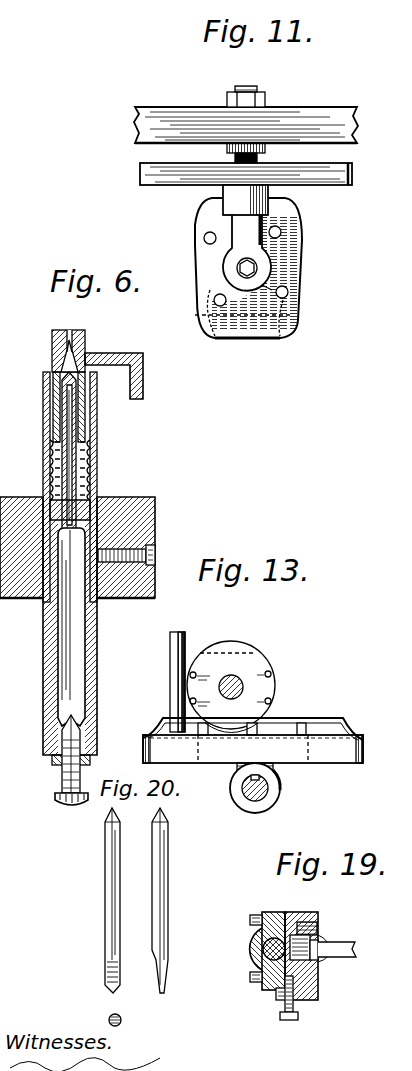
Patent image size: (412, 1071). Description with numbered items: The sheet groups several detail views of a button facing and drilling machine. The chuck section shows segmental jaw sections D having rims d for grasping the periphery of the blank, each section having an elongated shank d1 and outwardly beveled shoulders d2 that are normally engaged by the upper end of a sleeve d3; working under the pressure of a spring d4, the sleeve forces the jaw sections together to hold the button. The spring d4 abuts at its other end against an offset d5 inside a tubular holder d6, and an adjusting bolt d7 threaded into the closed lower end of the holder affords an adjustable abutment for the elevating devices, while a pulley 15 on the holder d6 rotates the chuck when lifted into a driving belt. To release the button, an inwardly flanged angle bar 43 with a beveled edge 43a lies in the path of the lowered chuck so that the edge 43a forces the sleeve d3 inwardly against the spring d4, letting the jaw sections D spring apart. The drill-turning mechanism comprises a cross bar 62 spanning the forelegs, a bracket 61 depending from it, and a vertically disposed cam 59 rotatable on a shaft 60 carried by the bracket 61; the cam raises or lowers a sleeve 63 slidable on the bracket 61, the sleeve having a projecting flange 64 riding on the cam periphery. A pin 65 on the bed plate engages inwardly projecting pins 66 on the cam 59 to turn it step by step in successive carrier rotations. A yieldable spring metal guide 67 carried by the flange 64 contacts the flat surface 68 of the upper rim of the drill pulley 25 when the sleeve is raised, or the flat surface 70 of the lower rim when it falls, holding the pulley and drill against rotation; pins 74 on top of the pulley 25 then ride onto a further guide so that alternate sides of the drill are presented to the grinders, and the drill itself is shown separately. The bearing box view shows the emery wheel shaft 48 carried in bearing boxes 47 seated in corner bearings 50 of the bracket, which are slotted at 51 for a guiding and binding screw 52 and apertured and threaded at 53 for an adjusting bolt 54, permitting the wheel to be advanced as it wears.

In FIG. 11, the cross bar 62 is at (292, 112).
In FIG. 11, the projecting flange 64 is at (140, 172).
In FIG. 13, the projecting flange 64 is at (148, 750).
In FIG. 11, the sleeve 63 is at (270, 200).
In FIG. 13, the sleeve 63 is at (230, 789).
In FIG. 11, the cam 59 is at (302, 262).
In FIG. 13, the cam 59 is at (200, 760).
In FIG. 11, the bracket 61 is at (232, 256).
In FIG. 13, the bracket 61 is at (255, 801).
In FIG. 11, the shaft 60 is at (272, 280).
In FIG. 11, the inwardly projecting pins 66 is at (208, 233).
In FIG. 13, the inwardly projecting pins 66 is at (306, 730).
In FIG. 11, the pin 65 is at (195, 315).
In FIG. 13, the pin 65 is at (172, 659).
In FIG. 6, the segmental jaw sections D is at (52, 346).
In FIG. 6, the rims d is at (85, 334).
In FIG. 6, the beveled edge 43a is at (106, 355).
In FIG. 6, the angle bar 43 is at (143, 383).
In FIG. 6, the sleeve d3 is at (43, 386).
In FIG. 6, the beveled shoulders d2 is at (53, 364).
In FIG. 6, the elongated shank d1 is at (62, 408).
In FIG. 6, the spring d4 is at (50, 467).
In FIG. 6, the pulley 15 is at (155, 528).
In FIG. 6, the offset d5 is at (92, 515).
In FIG. 6, the tubular holder d6 is at (48, 670).
In FIG. 6, the adjusting bolt d7 is at (62, 780).
In FIG. 13, the flat surface 70 is at (235, 652).
In FIG. 13, the drill pulley 25 is at (267, 668).
In FIG. 13, the pins 74 is at (190, 700).
In FIG. 13, the yieldable spring metal guide 67 is at (348, 724).
In FIG. 13, the flat surface 68 is at (262, 730).
In FIG. 19, the slot 51 is at (308, 925).
In FIG. 19, the guiding and binding screw 52 is at (333, 942).
In FIG. 19, the shaft 48 is at (250, 949).
In FIG. 19, the bearing boxes 47 is at (257, 962).
In FIG. 19, the threaded aperture 53 is at (278, 995).
In FIG. 19, the corner bearings 50 is at (308, 997).
In FIG. 19, the adjusting bolt 54 is at (290, 1020).